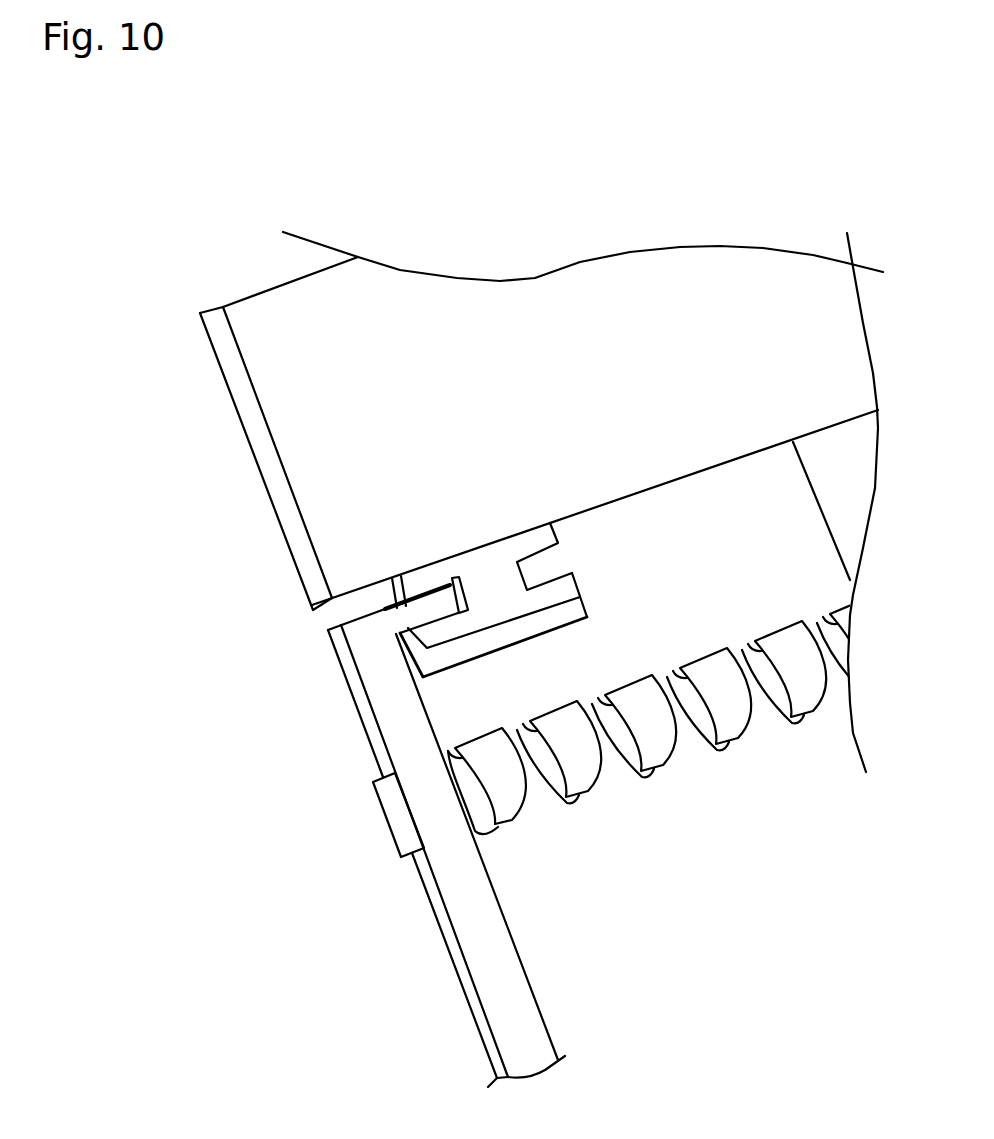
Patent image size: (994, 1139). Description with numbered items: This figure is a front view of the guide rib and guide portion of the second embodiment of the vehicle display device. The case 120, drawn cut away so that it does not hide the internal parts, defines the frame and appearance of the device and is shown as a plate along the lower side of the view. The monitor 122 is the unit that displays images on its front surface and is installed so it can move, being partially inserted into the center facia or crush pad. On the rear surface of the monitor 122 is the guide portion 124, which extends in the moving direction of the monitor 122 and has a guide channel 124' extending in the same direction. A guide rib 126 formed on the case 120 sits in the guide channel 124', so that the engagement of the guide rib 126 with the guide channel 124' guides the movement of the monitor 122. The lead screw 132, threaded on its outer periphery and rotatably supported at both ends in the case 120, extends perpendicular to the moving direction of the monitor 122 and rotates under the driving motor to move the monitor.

The case 120 is at (441, 848).
The monitor 122 is at (246, 433).
The guide portion 124 is at (525, 384).
The guide channel 124' is at (454, 393).
The guide rib 126 is at (473, 418).
The lead screw 132 is at (674, 749).